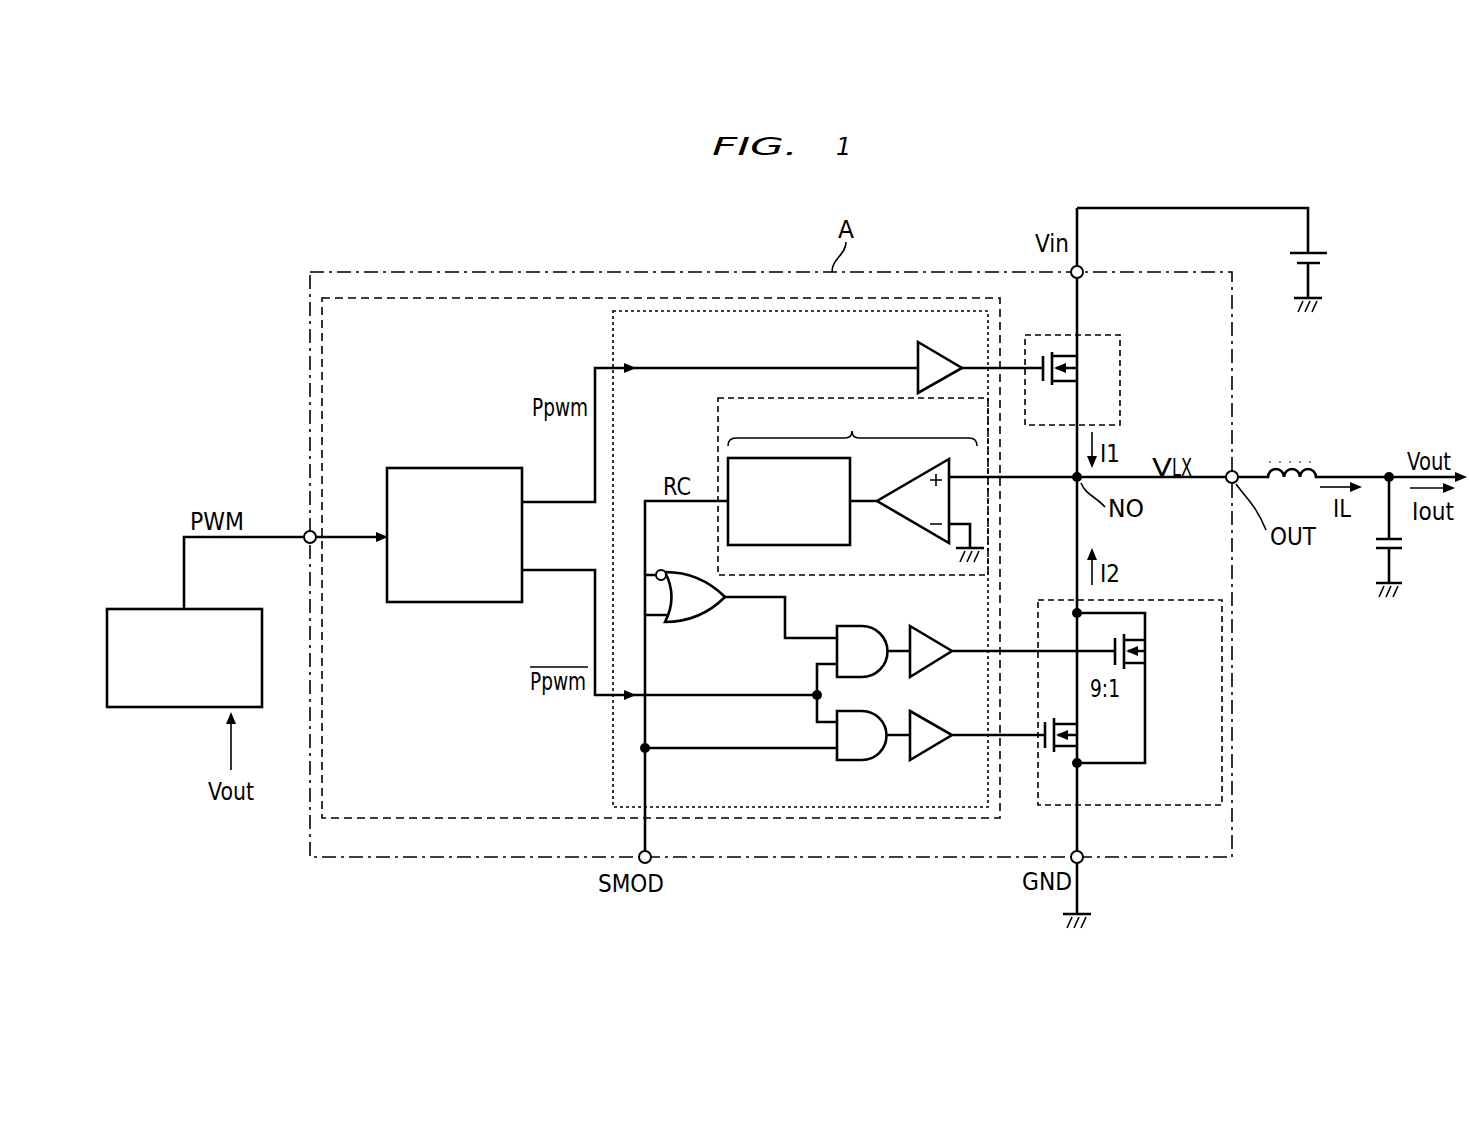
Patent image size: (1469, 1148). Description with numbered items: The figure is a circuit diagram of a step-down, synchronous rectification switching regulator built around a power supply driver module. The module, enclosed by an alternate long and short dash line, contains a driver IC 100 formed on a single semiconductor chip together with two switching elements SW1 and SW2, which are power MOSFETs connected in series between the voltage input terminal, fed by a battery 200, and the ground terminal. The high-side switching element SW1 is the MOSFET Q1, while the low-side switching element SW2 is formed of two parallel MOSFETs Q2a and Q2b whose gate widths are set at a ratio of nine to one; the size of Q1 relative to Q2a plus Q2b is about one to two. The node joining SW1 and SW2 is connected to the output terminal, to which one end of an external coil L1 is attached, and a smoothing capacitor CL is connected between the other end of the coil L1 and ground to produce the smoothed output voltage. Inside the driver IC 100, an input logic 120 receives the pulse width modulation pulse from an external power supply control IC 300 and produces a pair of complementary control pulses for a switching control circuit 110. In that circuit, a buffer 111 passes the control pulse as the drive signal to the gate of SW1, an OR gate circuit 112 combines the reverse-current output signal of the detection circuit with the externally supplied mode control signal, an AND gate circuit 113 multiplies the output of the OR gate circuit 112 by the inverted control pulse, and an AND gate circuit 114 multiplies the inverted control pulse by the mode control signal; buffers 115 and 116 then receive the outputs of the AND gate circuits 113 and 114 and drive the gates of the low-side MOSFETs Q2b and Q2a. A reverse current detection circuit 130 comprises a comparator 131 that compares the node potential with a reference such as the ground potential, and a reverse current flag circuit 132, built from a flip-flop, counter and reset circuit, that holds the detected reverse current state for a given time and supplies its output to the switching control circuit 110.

The driver IC 100 is at (500, 298).
The switching control circuit 110 is at (613, 774).
The buffer 111 is at (918, 361).
The OR gate circuit 112 is at (685, 623).
The AND gate circuit 113 is at (850, 627).
The AND gate circuit 114 is at (850, 760).
The buffer 115 is at (944, 627).
The buffer 116 is at (928, 752).
The input logic 120 is at (418, 603).
The reverse current detection circuit 130 is at (853, 486).
The comparator 131 is at (903, 521).
The reverse current flag circuit 132 is at (850, 473).
The battery 200 is at (1326, 258).
The power supply control IC 300 is at (152, 708).
The high-side switching element SW1 is at (1120, 363).
The low-side switching element SW2 is at (1170, 600).
The high-side MOSFET Q1 is at (1079, 369).
The low-side switch MOSFET Q2a is at (1085, 735).
The low-side switch MOSFET Q2b is at (1154, 651).
The coil L1 is at (1313, 458).
The smoothing capacitor CL is at (1404, 537).